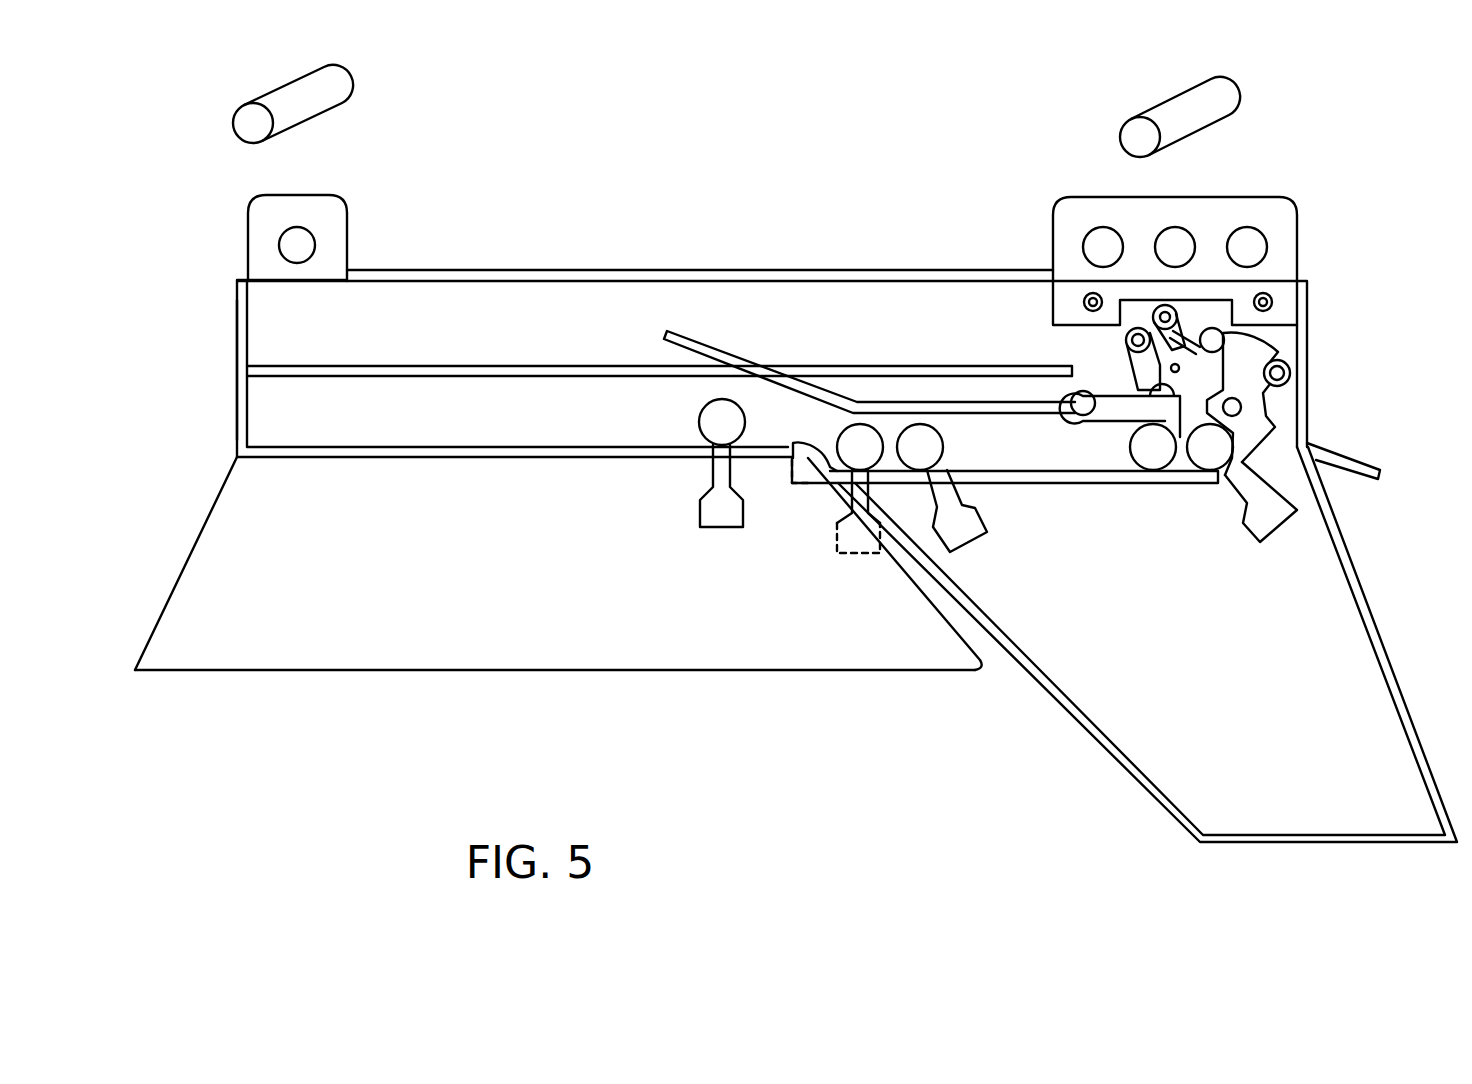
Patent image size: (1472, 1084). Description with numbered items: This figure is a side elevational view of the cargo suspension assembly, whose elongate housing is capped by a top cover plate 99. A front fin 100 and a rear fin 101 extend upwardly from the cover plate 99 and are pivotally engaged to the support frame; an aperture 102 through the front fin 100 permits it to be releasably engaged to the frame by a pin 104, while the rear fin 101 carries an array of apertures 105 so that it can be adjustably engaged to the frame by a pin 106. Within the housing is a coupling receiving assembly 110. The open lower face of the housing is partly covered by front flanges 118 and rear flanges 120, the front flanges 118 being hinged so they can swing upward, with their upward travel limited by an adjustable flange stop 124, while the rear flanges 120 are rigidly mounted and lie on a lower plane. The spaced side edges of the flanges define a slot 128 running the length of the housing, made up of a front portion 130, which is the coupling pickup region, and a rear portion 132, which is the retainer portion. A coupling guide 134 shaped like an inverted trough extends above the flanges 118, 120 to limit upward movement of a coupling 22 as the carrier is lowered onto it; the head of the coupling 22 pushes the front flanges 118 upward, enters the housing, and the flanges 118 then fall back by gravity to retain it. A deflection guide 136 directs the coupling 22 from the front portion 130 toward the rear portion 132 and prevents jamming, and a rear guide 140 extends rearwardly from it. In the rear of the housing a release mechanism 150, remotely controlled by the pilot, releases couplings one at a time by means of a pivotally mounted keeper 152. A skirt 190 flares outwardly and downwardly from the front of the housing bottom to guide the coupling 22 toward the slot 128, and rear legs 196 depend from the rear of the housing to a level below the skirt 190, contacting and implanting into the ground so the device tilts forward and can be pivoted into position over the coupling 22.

The top cover plate 99 is at (661, 270).
The front fin 100 is at (260, 207).
The rear fin 101 is at (1070, 215).
The aperture 102 is at (293, 243).
The pin 104 is at (312, 104).
The apertures 105 is at (1250, 247).
The pin 106 is at (1208, 113).
The coupling receiving assembly 110 is at (237, 416).
The front flanges 118 is at (335, 455).
The rear flanges 120 is at (1148, 488).
The adjustable flange stop 124 is at (318, 376).
The slot 128 is at (1068, 455).
The front portion of slot 130 is at (492, 425).
The rear portion of slot 132 is at (1047, 472).
The coupling guide 134 is at (513, 368).
The deflection guide 136 is at (813, 463).
The rear guide 140 is at (966, 400).
The release mechanism 150 is at (1273, 405).
The keeper 152 is at (1118, 402).
The skirt 190 is at (525, 645).
The rear legs 196 is at (1410, 720).
The coupling 22 is at (1268, 520).